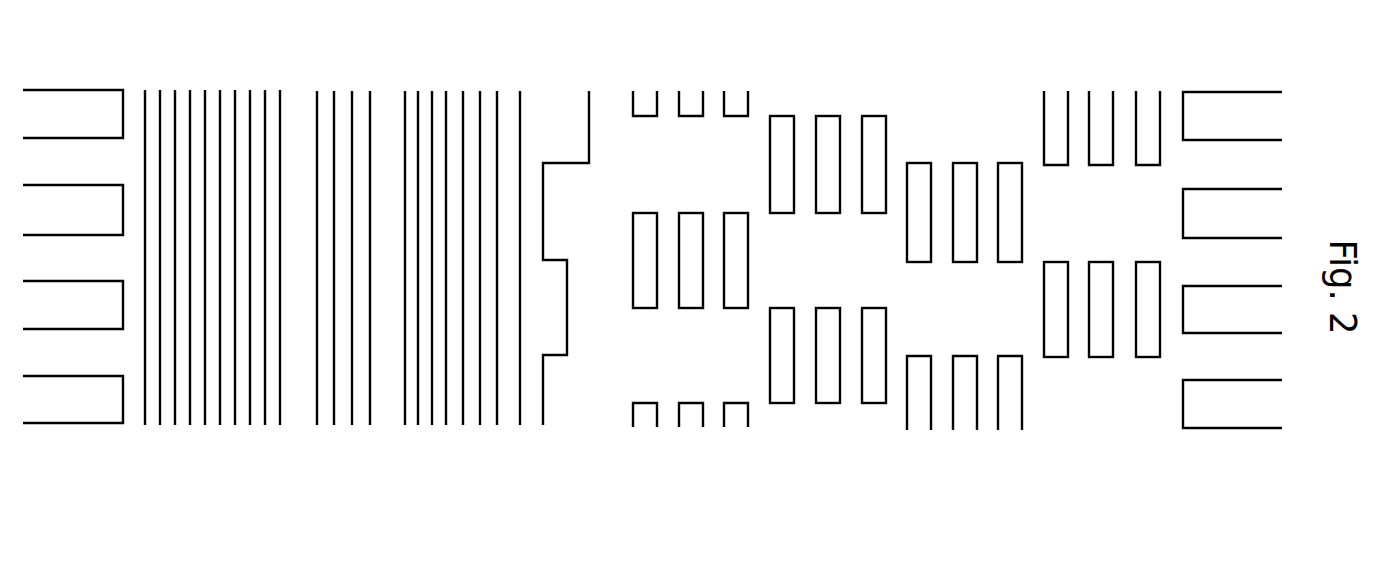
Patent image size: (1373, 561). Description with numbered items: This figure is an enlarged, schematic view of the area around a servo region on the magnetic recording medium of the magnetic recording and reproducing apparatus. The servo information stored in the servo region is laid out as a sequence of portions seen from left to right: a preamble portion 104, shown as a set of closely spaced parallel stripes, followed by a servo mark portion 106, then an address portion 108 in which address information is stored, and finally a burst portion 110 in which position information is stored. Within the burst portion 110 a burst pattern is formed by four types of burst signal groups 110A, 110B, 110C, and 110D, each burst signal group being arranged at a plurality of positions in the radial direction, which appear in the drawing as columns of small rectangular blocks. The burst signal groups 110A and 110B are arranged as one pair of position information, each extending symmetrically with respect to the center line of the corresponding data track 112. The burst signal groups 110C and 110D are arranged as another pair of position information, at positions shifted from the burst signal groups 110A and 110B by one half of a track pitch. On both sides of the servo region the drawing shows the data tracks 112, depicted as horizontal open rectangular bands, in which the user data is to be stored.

The preamble portion 104 is at (282, 74).
The servo mark portion 106 is at (372, 74).
The address portion 108 is at (592, 74).
The burst portion 110 is at (895, 260).
The burst signal group 110A is at (1043, 433).
The burst signal group 110B is at (905, 433).
The burst signal group 110C is at (767, 433).
The burst signal group 110D is at (630, 433).
The data track 112 is at (23, 74).